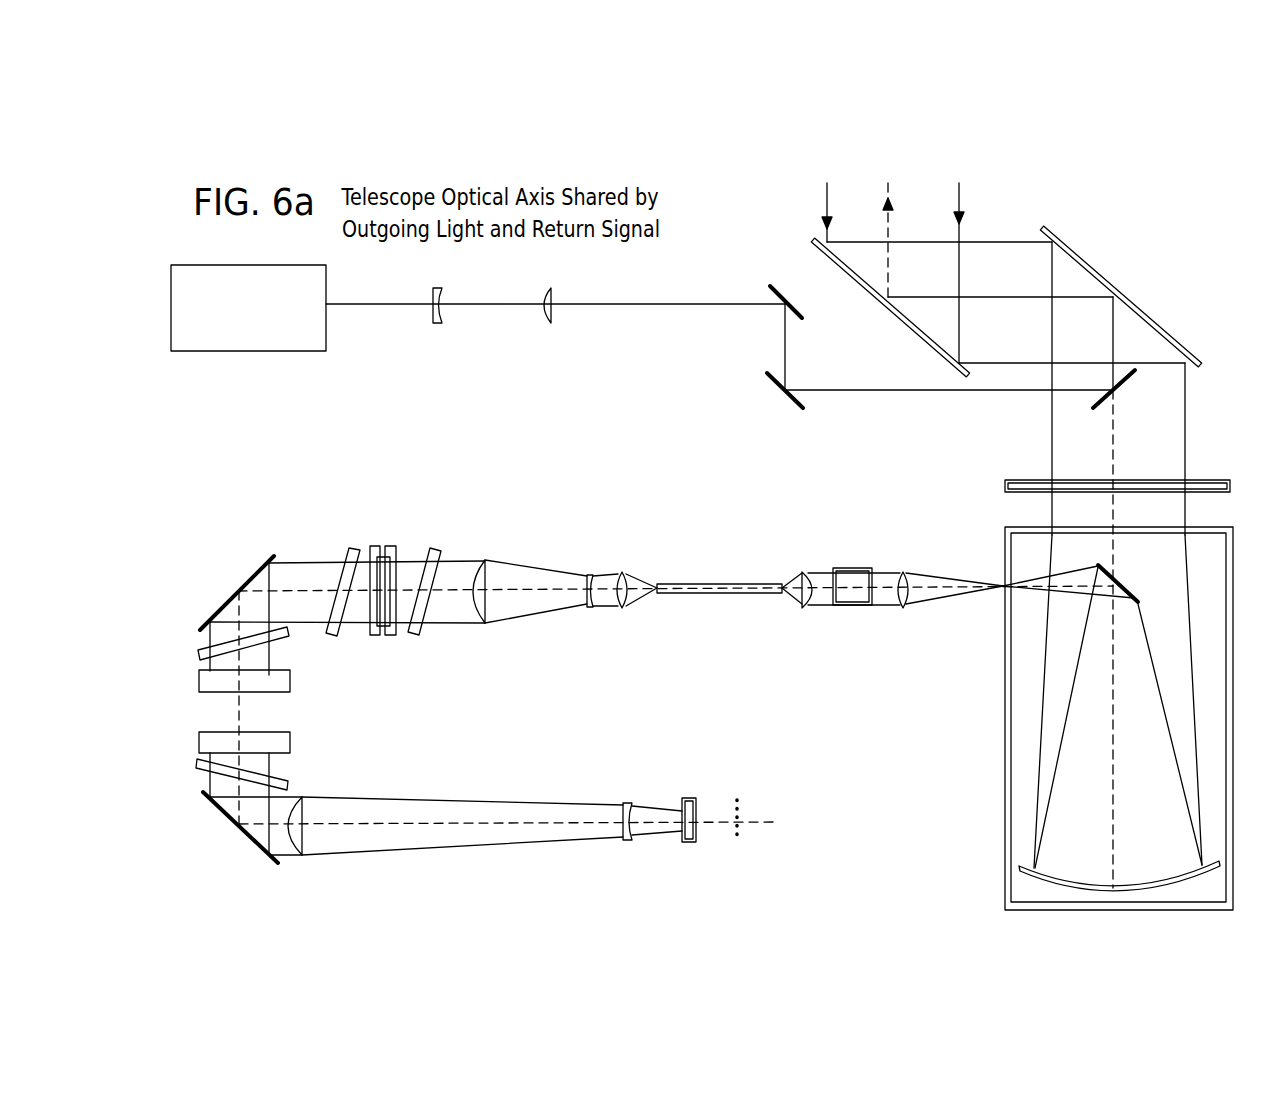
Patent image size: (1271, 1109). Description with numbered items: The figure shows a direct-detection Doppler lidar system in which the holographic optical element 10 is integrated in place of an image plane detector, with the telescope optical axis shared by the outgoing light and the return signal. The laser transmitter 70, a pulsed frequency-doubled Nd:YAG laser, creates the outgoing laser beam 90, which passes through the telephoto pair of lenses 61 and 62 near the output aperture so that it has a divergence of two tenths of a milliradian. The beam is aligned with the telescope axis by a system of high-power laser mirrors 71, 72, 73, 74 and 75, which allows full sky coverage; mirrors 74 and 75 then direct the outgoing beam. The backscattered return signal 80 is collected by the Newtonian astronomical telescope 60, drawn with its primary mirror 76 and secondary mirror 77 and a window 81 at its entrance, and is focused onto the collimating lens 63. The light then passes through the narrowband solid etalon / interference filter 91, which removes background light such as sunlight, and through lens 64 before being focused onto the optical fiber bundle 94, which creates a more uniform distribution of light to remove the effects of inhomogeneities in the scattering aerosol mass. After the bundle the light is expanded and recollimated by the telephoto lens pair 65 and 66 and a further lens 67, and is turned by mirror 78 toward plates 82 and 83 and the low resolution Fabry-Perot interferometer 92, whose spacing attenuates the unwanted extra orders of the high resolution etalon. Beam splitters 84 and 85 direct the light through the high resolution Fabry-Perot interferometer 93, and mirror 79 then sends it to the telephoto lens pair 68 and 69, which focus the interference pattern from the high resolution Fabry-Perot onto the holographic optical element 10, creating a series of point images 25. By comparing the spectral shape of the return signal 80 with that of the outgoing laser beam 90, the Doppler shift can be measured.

The holographic optical element 10 is at (690, 844).
The point images 25 is at (737, 846).
The telescope 60 is at (1088, 736).
The telephoto lens 61 is at (438, 326).
The telephoto lens 62 is at (548, 326).
The collimating lens 63 is at (903, 609).
The collimating lens 64 is at (804, 609).
The telephoto lens 65 is at (624, 609).
The telephoto lens 66 is at (590, 608).
The collimating lens 67 is at (480, 624).
The telephoto lens 68 is at (300, 858).
The telephoto lens 69 is at (628, 843).
The laser transmitter 70 is at (257, 341).
The high-power laser mirror 71 is at (795, 300).
The high-power laser mirror 72 is at (784, 394).
The high-power laser mirror 73 is at (1130, 379).
The high-power laser mirror 74 is at (1095, 268).
The high-power laser mirror 75 is at (826, 257).
The telescope primary mirror 76 is at (1158, 883).
The telescope secondary mirror 77 is at (1125, 581).
The mirror 78 is at (245, 589).
The mirror 79 is at (240, 828).
The return signal 80 is at (1052, 424).
The window 81 is at (1017, 480).
The etalon plate 82 is at (436, 547).
The etalon plate 83 is at (354, 547).
The beam splitter 84 is at (199, 656).
The beam splitter 85 is at (198, 764).
The outgoing laser beam 90 is at (888, 226).
The interference filter 91 is at (853, 606).
The low resolution Fabry-Perot interferometer 92 is at (384, 640).
The high resolution Fabry-Perot interferometer 93 is at (200, 683).
The optical fiber bundle 94 is at (700, 584).